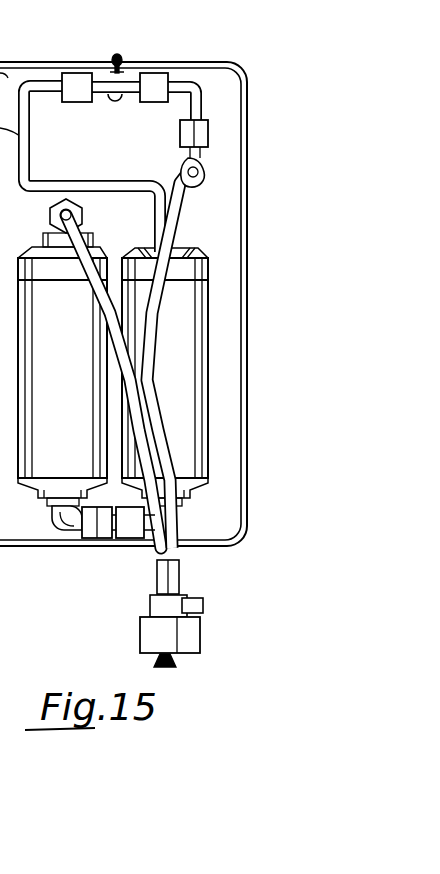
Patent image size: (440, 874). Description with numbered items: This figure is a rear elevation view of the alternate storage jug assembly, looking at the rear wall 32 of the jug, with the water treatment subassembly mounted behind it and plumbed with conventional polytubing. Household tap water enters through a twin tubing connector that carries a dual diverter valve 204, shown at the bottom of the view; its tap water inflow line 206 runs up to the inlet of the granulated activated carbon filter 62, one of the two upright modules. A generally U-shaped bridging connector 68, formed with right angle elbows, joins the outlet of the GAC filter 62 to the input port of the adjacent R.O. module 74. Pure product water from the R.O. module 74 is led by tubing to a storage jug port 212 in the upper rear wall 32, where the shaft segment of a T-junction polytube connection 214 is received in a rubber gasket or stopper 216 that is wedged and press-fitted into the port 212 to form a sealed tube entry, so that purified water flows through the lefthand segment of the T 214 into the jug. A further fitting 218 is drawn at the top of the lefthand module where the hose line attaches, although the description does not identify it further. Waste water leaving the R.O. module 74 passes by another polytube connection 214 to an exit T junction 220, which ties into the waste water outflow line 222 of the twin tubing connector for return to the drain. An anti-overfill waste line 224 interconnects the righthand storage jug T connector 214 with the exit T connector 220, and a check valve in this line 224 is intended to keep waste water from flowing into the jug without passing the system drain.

The rear wall 32 is at (216, 420).
The granulated activated carbon filter 62 is at (70, 428).
The R.O. module 74 is at (185, 378).
The U-shaped bridging connector 68 is at (65, 518).
The dual diverter valve 204 is at (160, 630).
The tap water inflow line 206 is at (118, 350).
The storage jug port 212 is at (117, 55).
The T-junction polytube connection 214 is at (121, 92).
The rubber gasket or stopper 216 is at (118, 98).
The hex nut fitting 218 is at (197, 216).
The exit T junction 220 is at (180, 168).
The waste water outflow line 222 is at (153, 307).
The anti-overfill waste line 224 is at (197, 80).